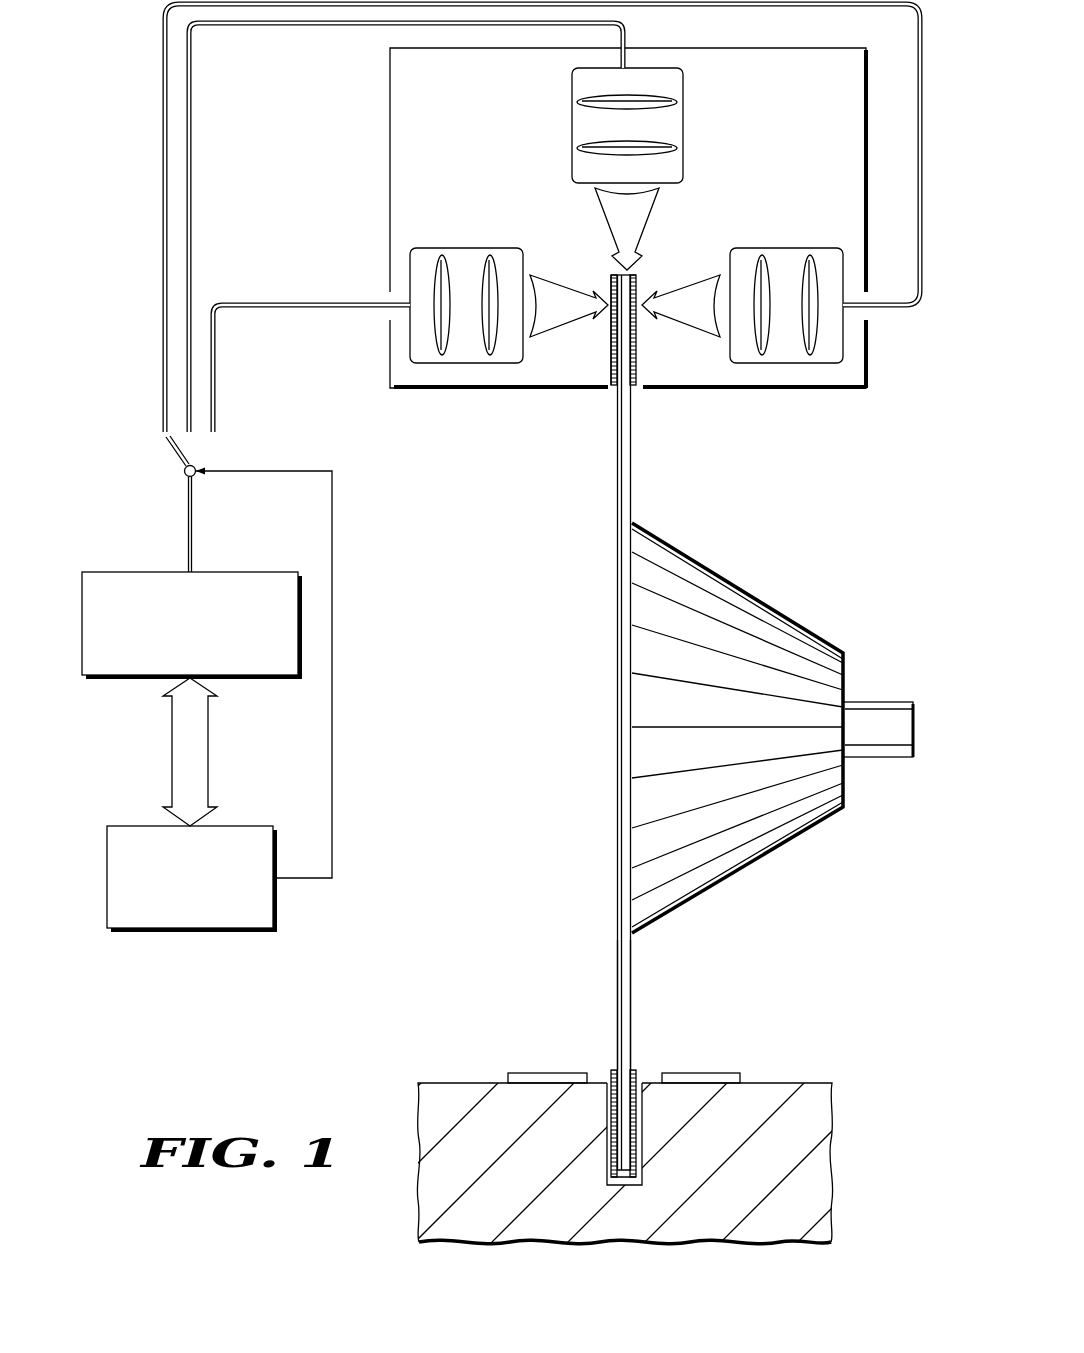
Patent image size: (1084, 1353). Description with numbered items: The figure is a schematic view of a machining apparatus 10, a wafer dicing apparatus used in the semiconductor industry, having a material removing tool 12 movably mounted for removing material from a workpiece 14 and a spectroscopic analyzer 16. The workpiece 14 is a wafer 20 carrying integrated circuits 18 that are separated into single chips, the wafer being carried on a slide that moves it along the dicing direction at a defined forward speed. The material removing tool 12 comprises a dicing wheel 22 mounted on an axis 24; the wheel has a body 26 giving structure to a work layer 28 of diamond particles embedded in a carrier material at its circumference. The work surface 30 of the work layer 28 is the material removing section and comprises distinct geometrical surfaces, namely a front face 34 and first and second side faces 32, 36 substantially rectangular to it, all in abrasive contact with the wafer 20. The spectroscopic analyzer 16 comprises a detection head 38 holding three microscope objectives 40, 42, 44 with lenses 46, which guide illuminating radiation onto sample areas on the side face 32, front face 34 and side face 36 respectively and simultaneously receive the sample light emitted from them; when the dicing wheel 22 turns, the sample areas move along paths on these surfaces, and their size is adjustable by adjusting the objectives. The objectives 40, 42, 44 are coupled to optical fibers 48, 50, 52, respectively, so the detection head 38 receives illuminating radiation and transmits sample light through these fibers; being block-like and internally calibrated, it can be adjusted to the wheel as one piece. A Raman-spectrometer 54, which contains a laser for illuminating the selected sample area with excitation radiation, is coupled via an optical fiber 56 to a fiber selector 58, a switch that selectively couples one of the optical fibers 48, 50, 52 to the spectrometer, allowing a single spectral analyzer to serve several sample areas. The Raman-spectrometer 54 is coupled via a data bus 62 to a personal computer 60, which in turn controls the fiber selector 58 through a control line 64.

The machining apparatus 10 is at (189, 1100).
The material removing tool 12 is at (856, 598).
The workpiece 14 is at (792, 1050).
The spectroscopic analyzer 16 is at (357, 395).
The integrated circuits 18 is at (550, 1073).
The wafer 20 is at (716, 1206).
The dicing wheel 22 is at (652, 470).
The axis 24 is at (884, 700).
The body 26 is at (617, 1003).
The work layer 28 is at (648, 358).
The work surface 30 is at (603, 370).
The first side face 32 is at (612, 340).
The front face 34 is at (617, 274).
The second side face 36 is at (640, 284).
The detection head 38 is at (390, 166).
The microscope objective 40 is at (472, 248).
The microscope objective 42 is at (572, 122).
The microscope objective 44 is at (791, 248).
The lenses 46 is at (590, 98).
The optical fiber 48 is at (322, 304).
The optical fiber 50 is at (191, 232).
The optical fiber 52 is at (163, 224).
The Raman-spectrometer 54 is at (246, 678).
The optical fiber 56 is at (187, 492).
The fiber selector 58 is at (176, 462).
The personal computer 60 is at (190, 930).
The data bus 62 is at (170, 758).
The control line 64 is at (330, 764).